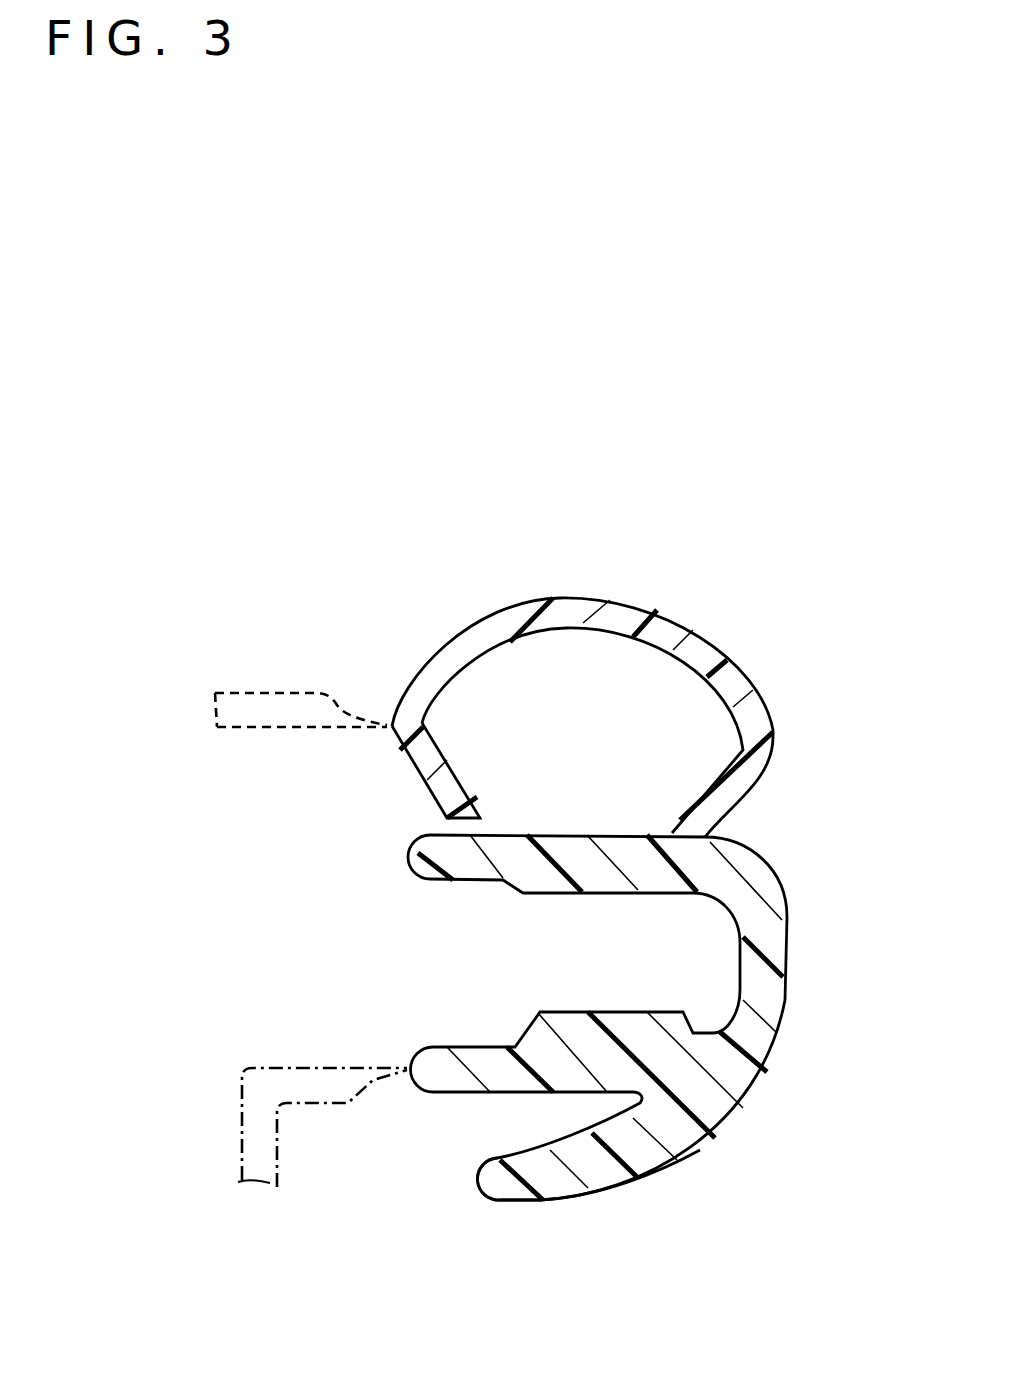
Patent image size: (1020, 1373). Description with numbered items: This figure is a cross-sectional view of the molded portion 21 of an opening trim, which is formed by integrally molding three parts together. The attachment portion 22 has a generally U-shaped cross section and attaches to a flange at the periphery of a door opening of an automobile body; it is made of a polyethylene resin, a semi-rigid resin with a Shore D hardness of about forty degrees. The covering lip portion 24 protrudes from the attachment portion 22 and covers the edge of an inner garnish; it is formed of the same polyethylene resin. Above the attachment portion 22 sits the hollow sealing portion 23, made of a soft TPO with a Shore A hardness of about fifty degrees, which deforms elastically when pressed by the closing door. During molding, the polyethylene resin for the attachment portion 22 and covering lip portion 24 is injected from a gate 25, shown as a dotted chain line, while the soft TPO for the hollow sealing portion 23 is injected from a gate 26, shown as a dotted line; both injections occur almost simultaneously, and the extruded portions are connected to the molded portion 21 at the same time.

The molded portion 21 is at (432, 629).
The attachment portion 22 is at (768, 992).
The hollow sealing portion 23 is at (565, 610).
The covering lip portion 24 is at (552, 1183).
The gate 25 is at (327, 1067).
The gate 26 is at (330, 732).